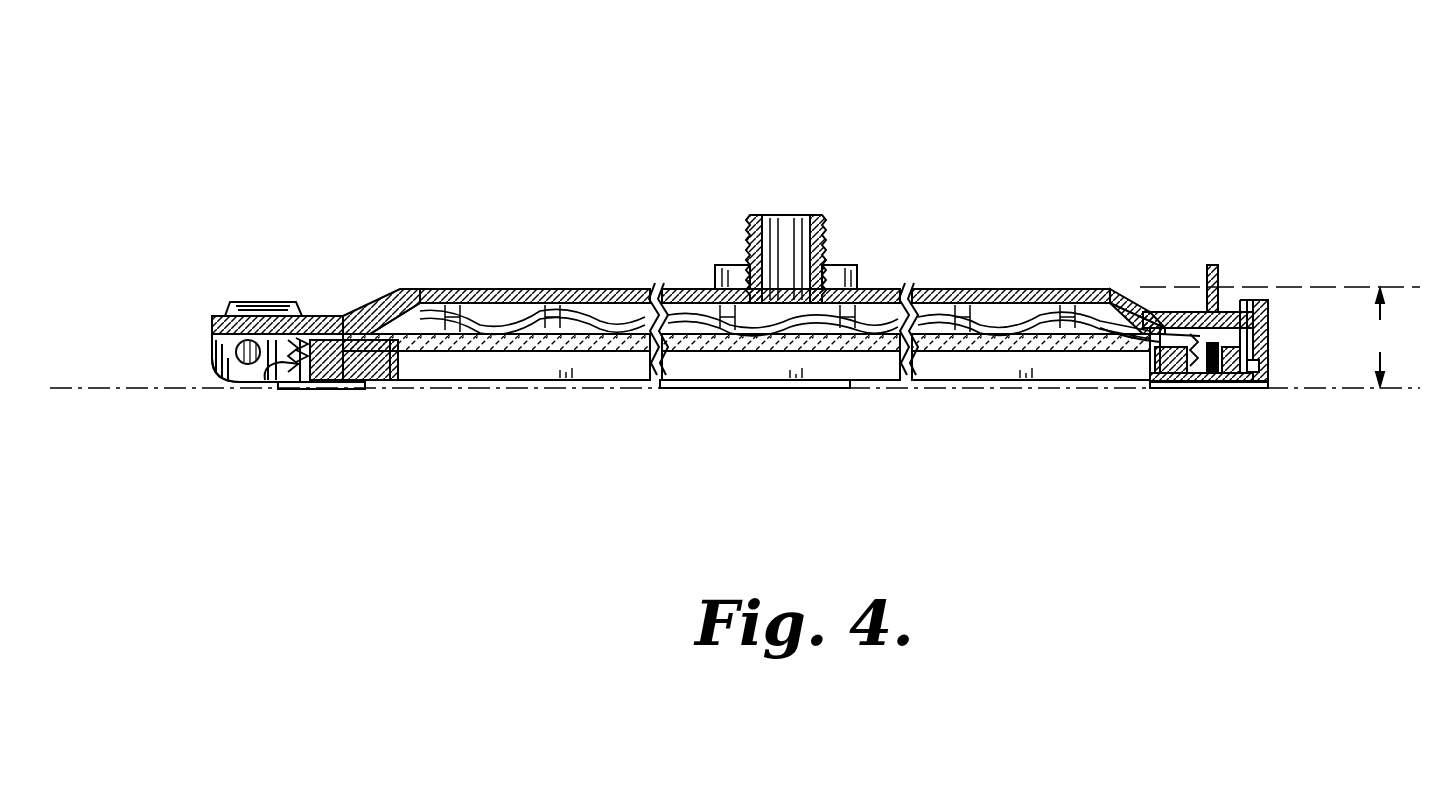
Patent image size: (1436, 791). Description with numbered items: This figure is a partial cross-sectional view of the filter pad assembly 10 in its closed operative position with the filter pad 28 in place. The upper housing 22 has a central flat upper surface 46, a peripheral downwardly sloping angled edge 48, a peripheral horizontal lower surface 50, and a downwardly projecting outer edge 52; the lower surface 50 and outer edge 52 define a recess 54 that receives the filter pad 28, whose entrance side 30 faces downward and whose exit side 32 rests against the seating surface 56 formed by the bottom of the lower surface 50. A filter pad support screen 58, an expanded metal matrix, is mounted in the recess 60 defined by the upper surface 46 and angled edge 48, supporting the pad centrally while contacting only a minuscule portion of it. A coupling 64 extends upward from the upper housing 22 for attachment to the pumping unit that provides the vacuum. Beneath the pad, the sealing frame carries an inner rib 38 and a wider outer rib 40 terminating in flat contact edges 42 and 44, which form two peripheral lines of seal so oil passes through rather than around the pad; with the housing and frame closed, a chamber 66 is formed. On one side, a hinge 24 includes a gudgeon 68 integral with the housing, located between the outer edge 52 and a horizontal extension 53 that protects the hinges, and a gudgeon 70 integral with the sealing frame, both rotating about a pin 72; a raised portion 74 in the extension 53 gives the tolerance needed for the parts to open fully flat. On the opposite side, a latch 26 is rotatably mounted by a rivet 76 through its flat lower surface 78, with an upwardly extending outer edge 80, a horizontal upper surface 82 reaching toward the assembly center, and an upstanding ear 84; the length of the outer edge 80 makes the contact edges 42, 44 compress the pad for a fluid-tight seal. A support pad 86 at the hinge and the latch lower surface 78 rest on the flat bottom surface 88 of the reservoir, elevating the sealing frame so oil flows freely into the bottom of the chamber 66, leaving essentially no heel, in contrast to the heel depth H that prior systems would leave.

The filter pad assembly 10 is at (908, 112).
The upper housing 22 is at (955, 287).
The hinge 24 is at (207, 357).
The latch 26 is at (862, 272).
The filter pad 28 is at (470, 352).
The entrance side 30 is at (535, 352).
The exit side 32 is at (430, 300).
The inner rib 38 is at (382, 382).
The outer rib 40 is at (328, 373).
The inner filter pad contact edge 42 is at (386, 312).
The outer filter pad contact edge 44 is at (347, 327).
The upper surface 46 is at (575, 289).
The angled edge 48 is at (407, 288).
The lower surface 50 is at (337, 323).
The outer edge 52 is at (263, 388).
The extension 53 is at (240, 317).
The recess 54 is at (317, 388).
The seating surface 56 is at (353, 323).
The filter pad support screen 58 is at (555, 300).
The recess 60 is at (1125, 336).
The coupling 64 is at (822, 222).
The chamber 66 is at (598, 357).
The gudgeon 68 is at (243, 388).
The gudgeon 70 is at (277, 388).
The pin 72 is at (227, 378).
The raised portion 74 is at (262, 300).
The rivet 76 is at (1208, 378).
The lower surface 78 is at (745, 389).
The outer edge 80 is at (1268, 374).
The upper surface 82 is at (1266, 312).
The ear 84 is at (745, 280).
The support pad 86 is at (300, 388).
The bottom surface 88 is at (137, 387).
The heel depth H is at (1389, 337).